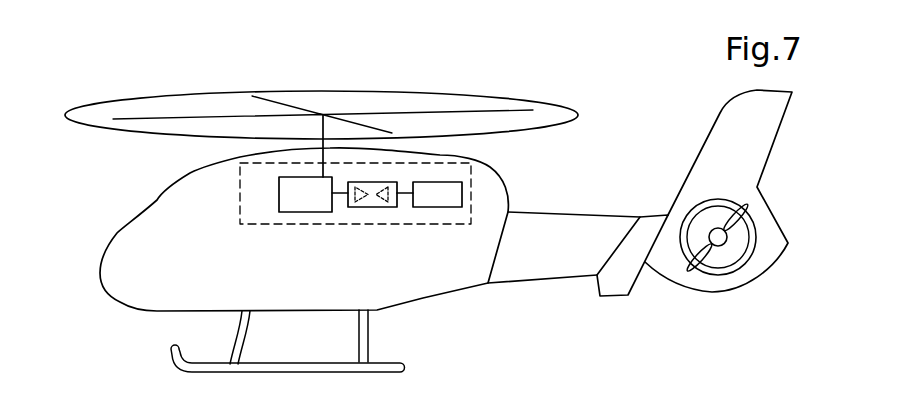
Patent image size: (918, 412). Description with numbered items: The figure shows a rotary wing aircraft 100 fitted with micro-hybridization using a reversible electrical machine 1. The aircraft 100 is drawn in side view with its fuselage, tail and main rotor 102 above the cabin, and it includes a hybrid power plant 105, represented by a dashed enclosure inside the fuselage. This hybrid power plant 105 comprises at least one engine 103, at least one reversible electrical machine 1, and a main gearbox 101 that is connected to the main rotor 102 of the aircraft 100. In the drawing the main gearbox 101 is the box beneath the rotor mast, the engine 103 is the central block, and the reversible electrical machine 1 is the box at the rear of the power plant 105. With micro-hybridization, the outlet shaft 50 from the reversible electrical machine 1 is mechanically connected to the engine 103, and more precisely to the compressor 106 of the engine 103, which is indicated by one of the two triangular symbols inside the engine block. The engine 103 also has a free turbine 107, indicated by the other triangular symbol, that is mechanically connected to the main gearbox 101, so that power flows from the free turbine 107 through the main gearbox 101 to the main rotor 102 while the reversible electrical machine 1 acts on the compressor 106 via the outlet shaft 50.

The reversible electrical machine 1 is at (450, 195).
The outlet shaft 50 is at (405, 197).
The aircraft 100 is at (530, 322).
The main gearbox 101 is at (279, 203).
The main rotor 102 is at (213, 103).
The engine 103 is at (365, 181).
The hybrid power plant 105 is at (358, 226).
The compressor 106 is at (376, 200).
The free turbine 107 is at (360, 206).